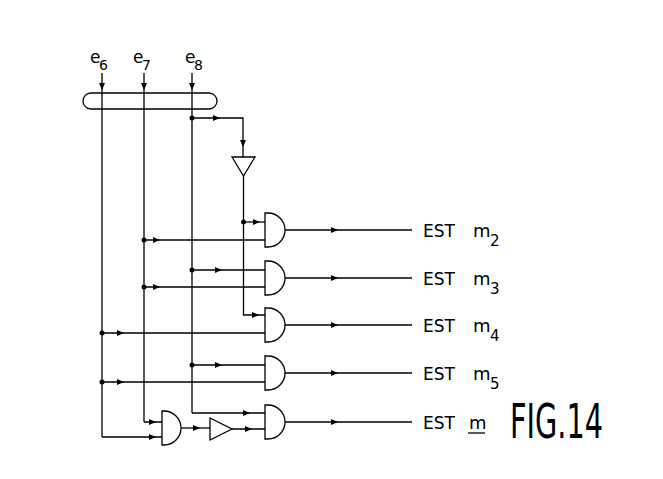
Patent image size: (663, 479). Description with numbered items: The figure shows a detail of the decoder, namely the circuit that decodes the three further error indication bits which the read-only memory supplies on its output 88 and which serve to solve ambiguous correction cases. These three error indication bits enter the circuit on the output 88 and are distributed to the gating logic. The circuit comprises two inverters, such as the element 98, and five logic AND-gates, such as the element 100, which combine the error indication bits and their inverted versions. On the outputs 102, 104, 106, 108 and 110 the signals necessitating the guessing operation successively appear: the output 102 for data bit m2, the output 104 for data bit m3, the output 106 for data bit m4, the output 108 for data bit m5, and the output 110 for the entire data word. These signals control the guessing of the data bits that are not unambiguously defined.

The output 88 is at (83, 101).
The inverter 98 is at (251, 165).
The logic AND-gate 100 is at (282, 216).
The output 102 is at (358, 230).
The output 104 is at (352, 278).
The output 106 is at (352, 325).
The output 108 is at (352, 373).
The output 110 is at (352, 422).